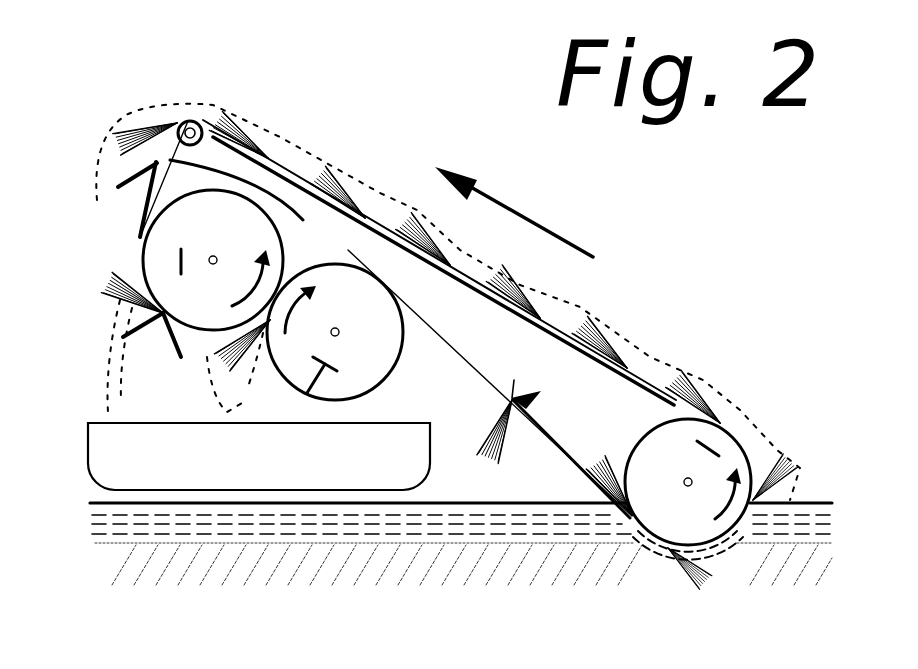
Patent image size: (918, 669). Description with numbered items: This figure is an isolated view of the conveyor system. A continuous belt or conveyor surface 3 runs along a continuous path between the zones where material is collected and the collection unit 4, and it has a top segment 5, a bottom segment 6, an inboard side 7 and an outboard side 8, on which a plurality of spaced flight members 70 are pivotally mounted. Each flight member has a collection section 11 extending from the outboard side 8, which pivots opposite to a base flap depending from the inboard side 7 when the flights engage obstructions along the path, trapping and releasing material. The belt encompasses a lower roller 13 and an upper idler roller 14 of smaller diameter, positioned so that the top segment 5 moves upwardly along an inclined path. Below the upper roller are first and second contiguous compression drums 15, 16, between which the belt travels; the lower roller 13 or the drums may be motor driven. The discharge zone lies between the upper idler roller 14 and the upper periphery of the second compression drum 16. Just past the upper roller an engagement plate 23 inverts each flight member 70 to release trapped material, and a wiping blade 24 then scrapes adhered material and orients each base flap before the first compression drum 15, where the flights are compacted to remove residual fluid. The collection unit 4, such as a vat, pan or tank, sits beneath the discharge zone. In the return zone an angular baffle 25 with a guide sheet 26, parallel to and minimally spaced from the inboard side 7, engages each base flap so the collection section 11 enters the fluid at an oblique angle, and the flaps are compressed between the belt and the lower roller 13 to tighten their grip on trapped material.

The conveyor surface 3 is at (762, 443).
The collection unit 4 is at (302, 470).
The top segment 5 is at (392, 200).
The bottom segment 6 is at (468, 380).
The inboard side 7 is at (485, 374).
The outboard side 8 is at (655, 378).
The collection section 11 is at (247, 121).
The lower roller 13 is at (708, 447).
The upper idler roller 14 is at (192, 118).
The first compression drum 15 is at (181, 262).
The second compression drum 16 is at (307, 392).
The engagement plate 23 is at (132, 208).
The wiping blade 24 is at (156, 333).
The angular baffle 25 is at (523, 383).
The guide sheet 26 is at (567, 438).
The flight members 70 is at (535, 275).